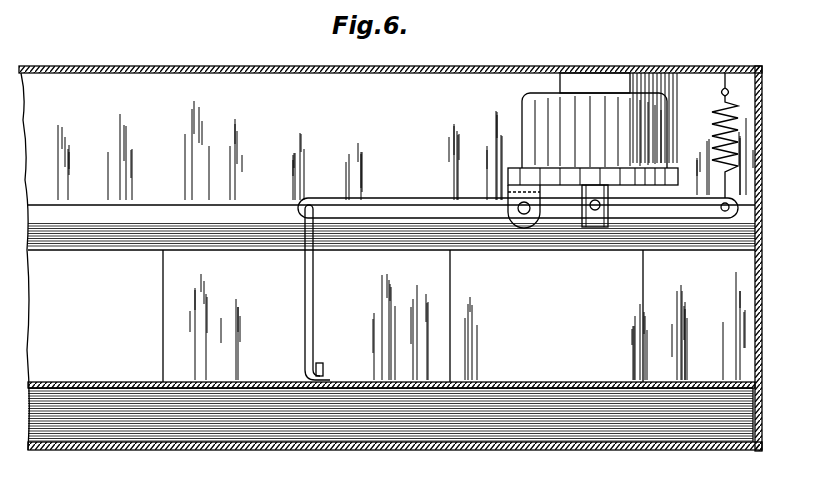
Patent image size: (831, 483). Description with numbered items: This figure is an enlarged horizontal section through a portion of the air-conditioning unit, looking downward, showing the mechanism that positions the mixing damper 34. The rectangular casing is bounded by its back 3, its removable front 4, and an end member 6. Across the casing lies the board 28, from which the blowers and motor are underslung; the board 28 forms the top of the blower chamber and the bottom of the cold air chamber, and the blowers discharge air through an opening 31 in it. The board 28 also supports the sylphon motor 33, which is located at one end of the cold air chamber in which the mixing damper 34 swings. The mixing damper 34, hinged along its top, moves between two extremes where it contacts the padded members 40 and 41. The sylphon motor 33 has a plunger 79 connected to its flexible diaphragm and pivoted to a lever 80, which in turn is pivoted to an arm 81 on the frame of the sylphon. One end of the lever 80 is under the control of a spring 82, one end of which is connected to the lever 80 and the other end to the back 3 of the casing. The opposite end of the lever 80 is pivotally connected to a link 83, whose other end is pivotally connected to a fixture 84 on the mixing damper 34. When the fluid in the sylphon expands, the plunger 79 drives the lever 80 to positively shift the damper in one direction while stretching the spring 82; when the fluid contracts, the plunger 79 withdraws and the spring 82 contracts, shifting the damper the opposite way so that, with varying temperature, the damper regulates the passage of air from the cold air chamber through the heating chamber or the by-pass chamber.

The back 3 is at (99, 66).
The front 4 is at (612, 450).
The end member 6 is at (762, 278).
The board 28 is at (405, 235).
The opening 31 is at (350, 316).
The sylphon motor 33 is at (522, 102).
The mixing damper 34 is at (525, 382).
The padded member 40 is at (172, 447).
The padded member 41 is at (233, 222).
The plunger 79 is at (598, 228).
The lever 80 is at (398, 205).
The arm 81 is at (524, 216).
The spring 82 is at (718, 112).
The link 83 is at (313, 280).
The fixture 84 is at (322, 363).